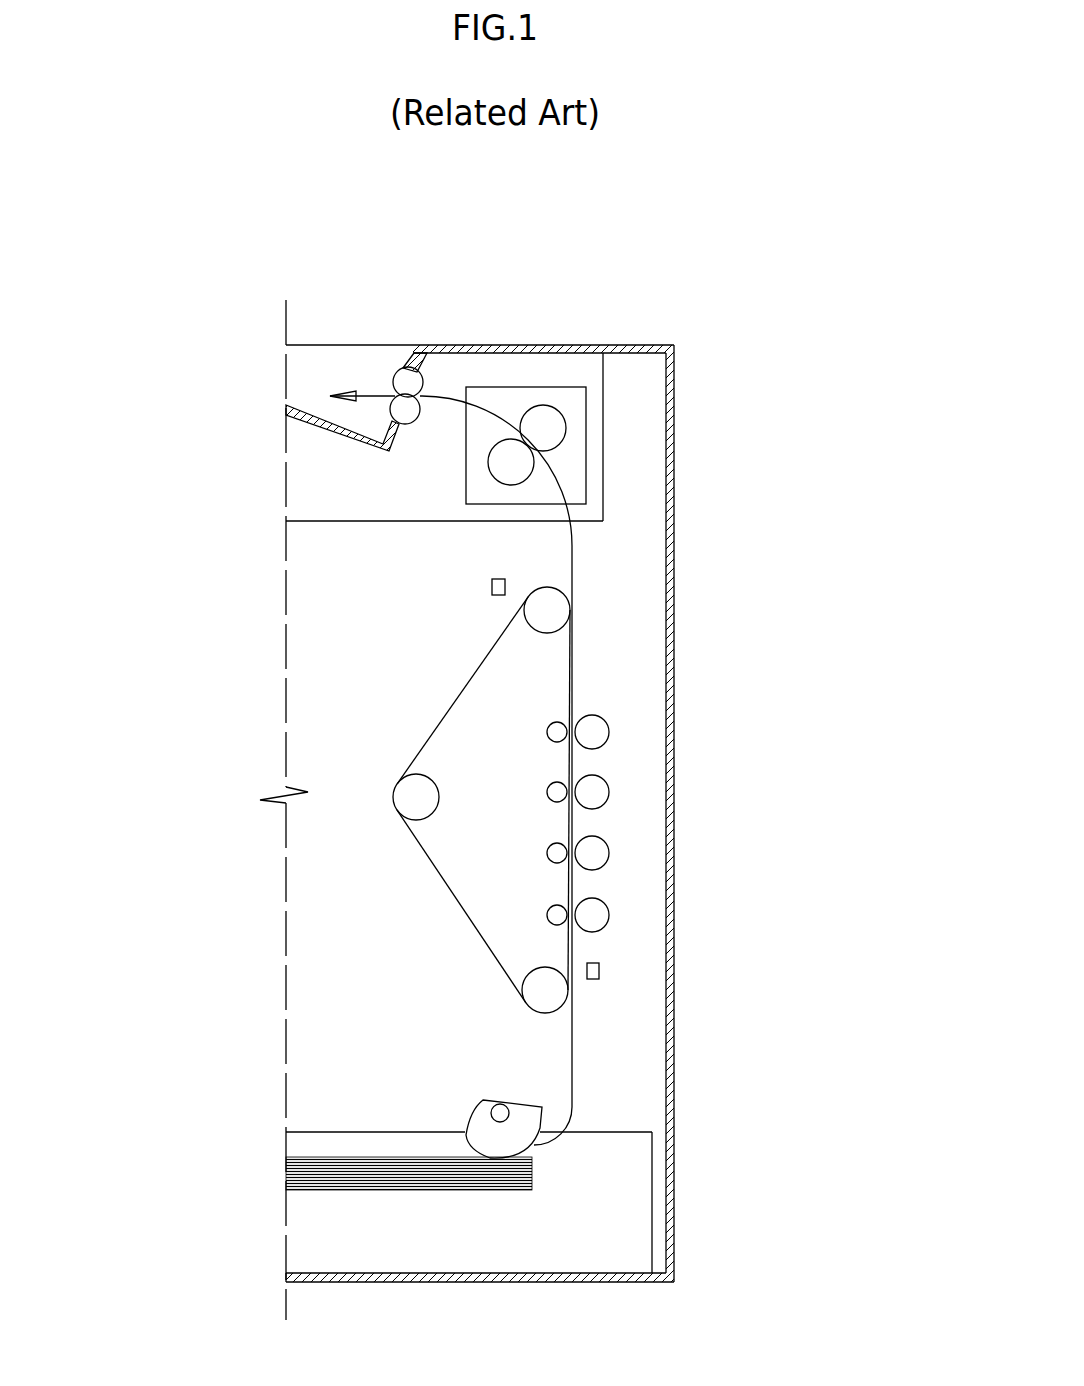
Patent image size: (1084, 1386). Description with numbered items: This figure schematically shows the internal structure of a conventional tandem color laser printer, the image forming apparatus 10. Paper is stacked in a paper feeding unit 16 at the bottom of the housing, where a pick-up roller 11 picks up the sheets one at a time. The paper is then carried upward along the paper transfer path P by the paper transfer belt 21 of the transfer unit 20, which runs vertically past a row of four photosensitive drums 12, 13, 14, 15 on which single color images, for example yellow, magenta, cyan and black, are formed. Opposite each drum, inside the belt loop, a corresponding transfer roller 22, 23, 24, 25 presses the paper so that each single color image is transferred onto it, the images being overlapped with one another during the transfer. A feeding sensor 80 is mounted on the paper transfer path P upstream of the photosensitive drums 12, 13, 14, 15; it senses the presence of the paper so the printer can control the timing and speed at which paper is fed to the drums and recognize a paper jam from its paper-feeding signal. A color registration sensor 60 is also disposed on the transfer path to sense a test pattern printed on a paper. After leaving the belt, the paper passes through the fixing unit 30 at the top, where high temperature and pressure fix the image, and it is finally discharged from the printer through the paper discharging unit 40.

The image forming apparatus 10 is at (707, 221).
The pick-up roller 11 is at (478, 1127).
The photosensitive drum 12 is at (592, 915).
The photosensitive drum 13 is at (592, 853).
The photosensitive drum 14 is at (592, 792).
The photosensitive drum 15 is at (592, 732).
The paper feeding unit 16 is at (630, 1210).
The transfer unit 20 is at (465, 800).
The paper transfer belt 21 is at (460, 687).
The transfer roller 22 is at (548, 915).
The transfer roller 23 is at (548, 853).
The transfer roller 24 is at (548, 792).
The transfer roller 25 is at (548, 732).
The fixing unit 30 is at (588, 428).
The paper discharging unit 40 is at (429, 362).
The color registration sensor 60 is at (492, 587).
The feeding sensor 80 is at (600, 969).
The paper transfer path P is at (573, 540).